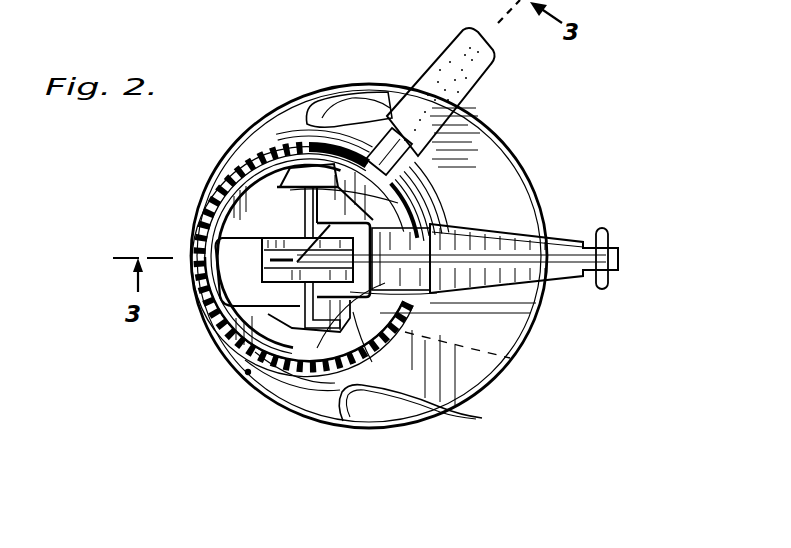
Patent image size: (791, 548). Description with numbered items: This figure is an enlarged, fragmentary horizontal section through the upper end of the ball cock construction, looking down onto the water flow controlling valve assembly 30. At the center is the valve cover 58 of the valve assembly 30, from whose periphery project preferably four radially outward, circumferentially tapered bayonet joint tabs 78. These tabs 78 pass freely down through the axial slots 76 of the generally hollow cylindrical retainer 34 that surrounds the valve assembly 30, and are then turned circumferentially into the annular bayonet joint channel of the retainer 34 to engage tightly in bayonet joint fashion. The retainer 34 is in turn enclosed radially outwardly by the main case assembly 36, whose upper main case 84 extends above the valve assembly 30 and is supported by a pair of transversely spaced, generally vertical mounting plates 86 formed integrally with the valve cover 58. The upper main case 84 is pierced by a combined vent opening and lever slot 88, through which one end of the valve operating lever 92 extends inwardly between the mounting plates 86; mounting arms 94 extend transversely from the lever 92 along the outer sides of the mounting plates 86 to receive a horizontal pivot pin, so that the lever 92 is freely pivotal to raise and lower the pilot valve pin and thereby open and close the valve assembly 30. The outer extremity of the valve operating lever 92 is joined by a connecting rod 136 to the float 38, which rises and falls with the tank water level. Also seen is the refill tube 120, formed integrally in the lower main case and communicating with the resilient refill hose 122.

The valve assembly 30 is at (250, 214).
The retainer 34 is at (226, 201).
The main case assembly 36 is at (248, 372).
The float 38 is at (266, 123).
The valve cover 58 is at (277, 310).
The axial slots 76 is at (300, 192).
The bayonet joint tabs 78 is at (298, 103).
The upper main case 84 is at (353, 312).
The mounting plates 86 is at (262, 243).
The combined vent opening and lever slot 88 is at (437, 293).
The valve operating lever 92 is at (520, 236).
The mounting arms 94 is at (290, 178).
The refill tube 120 is at (390, 150).
The refill hose 122 is at (487, 74).
The connecting rod 136 is at (598, 230).